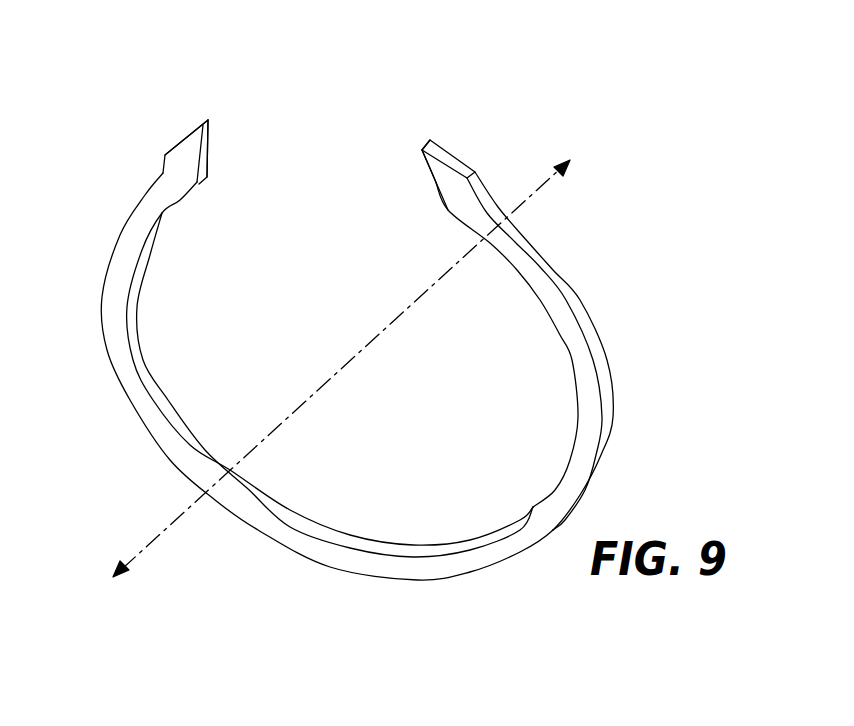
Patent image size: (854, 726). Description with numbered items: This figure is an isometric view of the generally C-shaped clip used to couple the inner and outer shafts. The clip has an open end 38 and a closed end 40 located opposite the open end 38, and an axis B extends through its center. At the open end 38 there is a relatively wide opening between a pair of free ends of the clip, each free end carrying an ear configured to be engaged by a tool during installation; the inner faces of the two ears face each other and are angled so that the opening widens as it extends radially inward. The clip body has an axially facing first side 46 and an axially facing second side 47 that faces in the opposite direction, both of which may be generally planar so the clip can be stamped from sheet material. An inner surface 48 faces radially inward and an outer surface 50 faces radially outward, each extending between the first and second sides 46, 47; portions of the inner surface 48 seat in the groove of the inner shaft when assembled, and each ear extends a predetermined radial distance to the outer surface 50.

The open end 38 is at (360, 329).
The closed end 40 is at (306, 586).
The first side 46 is at (605, 350).
The second side 47 is at (580, 365).
The inner surface 48 is at (133, 325).
The outer surface 50 is at (575, 302).